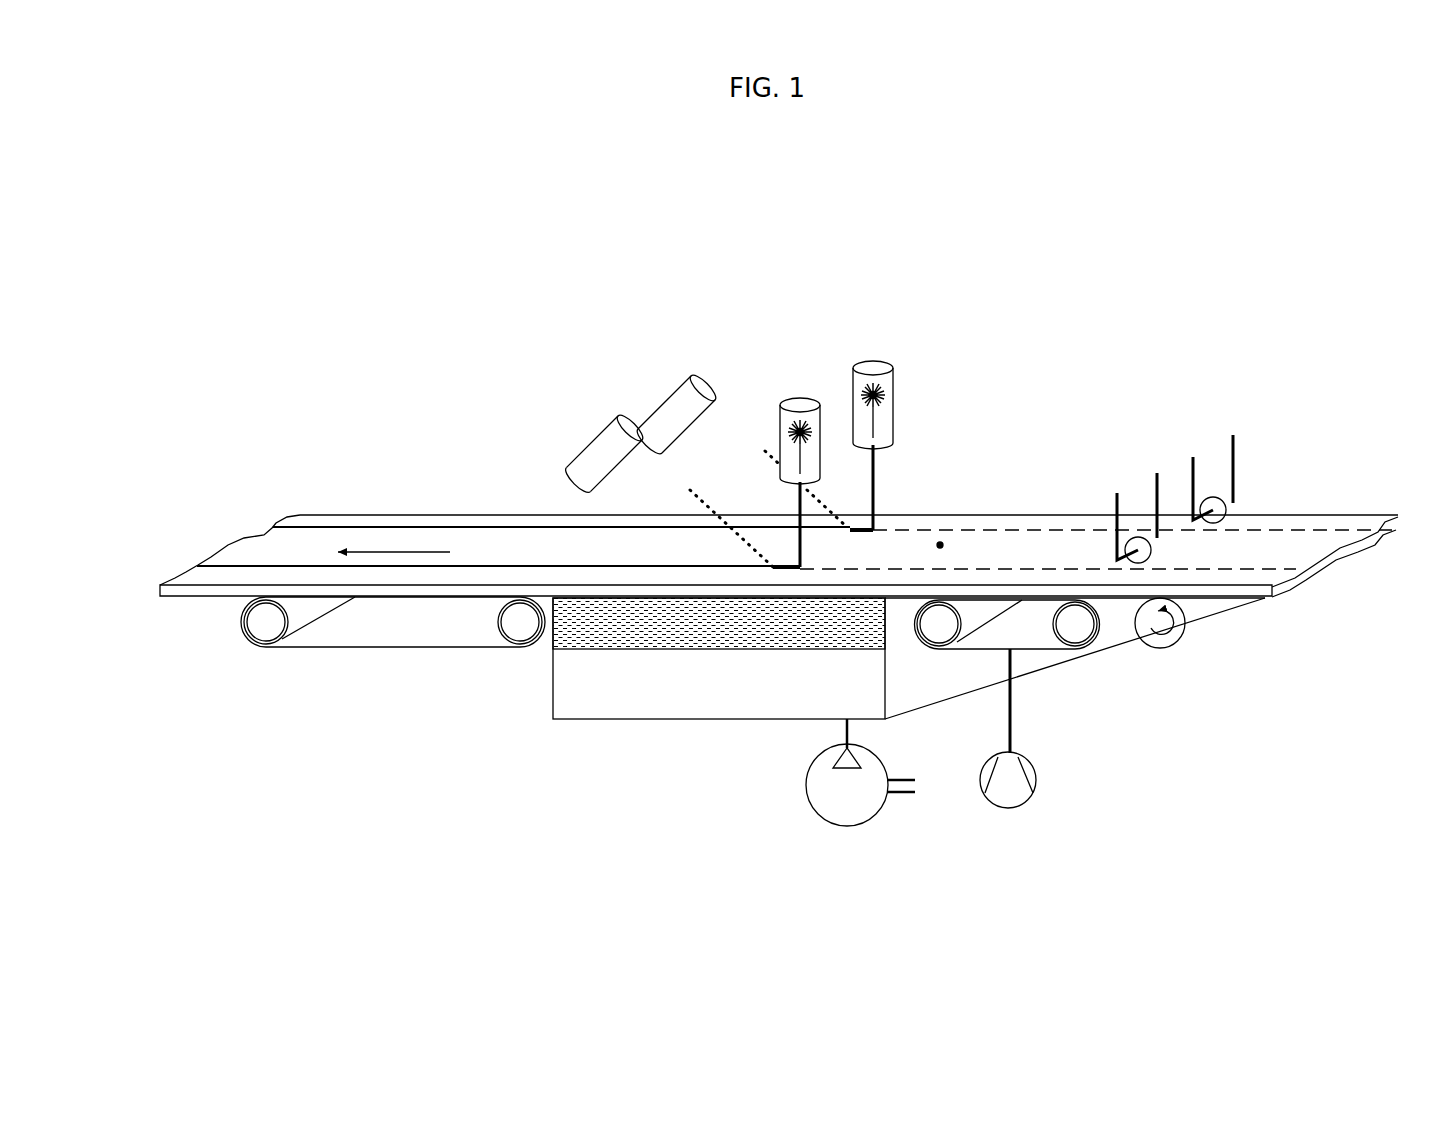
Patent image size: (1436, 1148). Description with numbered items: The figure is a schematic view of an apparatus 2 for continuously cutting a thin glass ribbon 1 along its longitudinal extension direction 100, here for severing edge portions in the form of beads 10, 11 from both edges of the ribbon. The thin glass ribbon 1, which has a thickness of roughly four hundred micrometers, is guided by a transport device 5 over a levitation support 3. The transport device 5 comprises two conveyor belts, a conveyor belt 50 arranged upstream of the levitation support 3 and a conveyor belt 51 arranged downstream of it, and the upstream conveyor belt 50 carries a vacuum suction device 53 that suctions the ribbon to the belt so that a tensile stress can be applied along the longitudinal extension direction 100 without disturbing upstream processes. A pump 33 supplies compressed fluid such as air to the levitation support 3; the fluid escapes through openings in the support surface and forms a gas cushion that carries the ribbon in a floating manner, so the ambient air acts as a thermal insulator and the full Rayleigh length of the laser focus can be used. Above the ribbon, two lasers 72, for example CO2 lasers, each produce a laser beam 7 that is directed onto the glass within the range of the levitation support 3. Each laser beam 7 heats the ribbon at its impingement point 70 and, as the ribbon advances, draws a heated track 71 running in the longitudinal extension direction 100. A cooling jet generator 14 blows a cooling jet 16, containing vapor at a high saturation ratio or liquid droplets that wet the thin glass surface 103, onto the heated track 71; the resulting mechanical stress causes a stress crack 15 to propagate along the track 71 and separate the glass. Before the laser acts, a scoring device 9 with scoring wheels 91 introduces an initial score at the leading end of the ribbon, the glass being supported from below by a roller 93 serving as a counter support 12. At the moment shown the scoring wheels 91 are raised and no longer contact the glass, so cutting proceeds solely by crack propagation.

The thin glass ribbon 1 is at (1343, 508).
The apparatus 2 is at (779, 153).
The levitation support 3 is at (572, 628).
The transport device 5 is at (440, 626).
The laser beam 7 is at (797, 502).
The scoring device 9 is at (1153, 480).
The bead 10 is at (208, 577).
The bead 11 is at (315, 518).
The counter support 12 is at (1214, 632).
The cooling jet generator 14 is at (630, 424).
The stress crack 15 is at (523, 529).
The cooling jet 16 is at (668, 440).
The pump 33 is at (847, 826).
The conveyor belt 50 is at (1032, 634).
The conveyor belt 51 is at (407, 647).
The vacuum suction device 53 is at (1008, 808).
The impingement point 70 is at (800, 568).
The track 71 is at (787, 569).
The laser 72 is at (800, 398).
The scoring wheel 91 is at (1115, 495).
The roller 93 is at (1165, 649).
The longitudinal extension direction 100 is at (390, 552).
The thin glass surface 103 is at (940, 542).